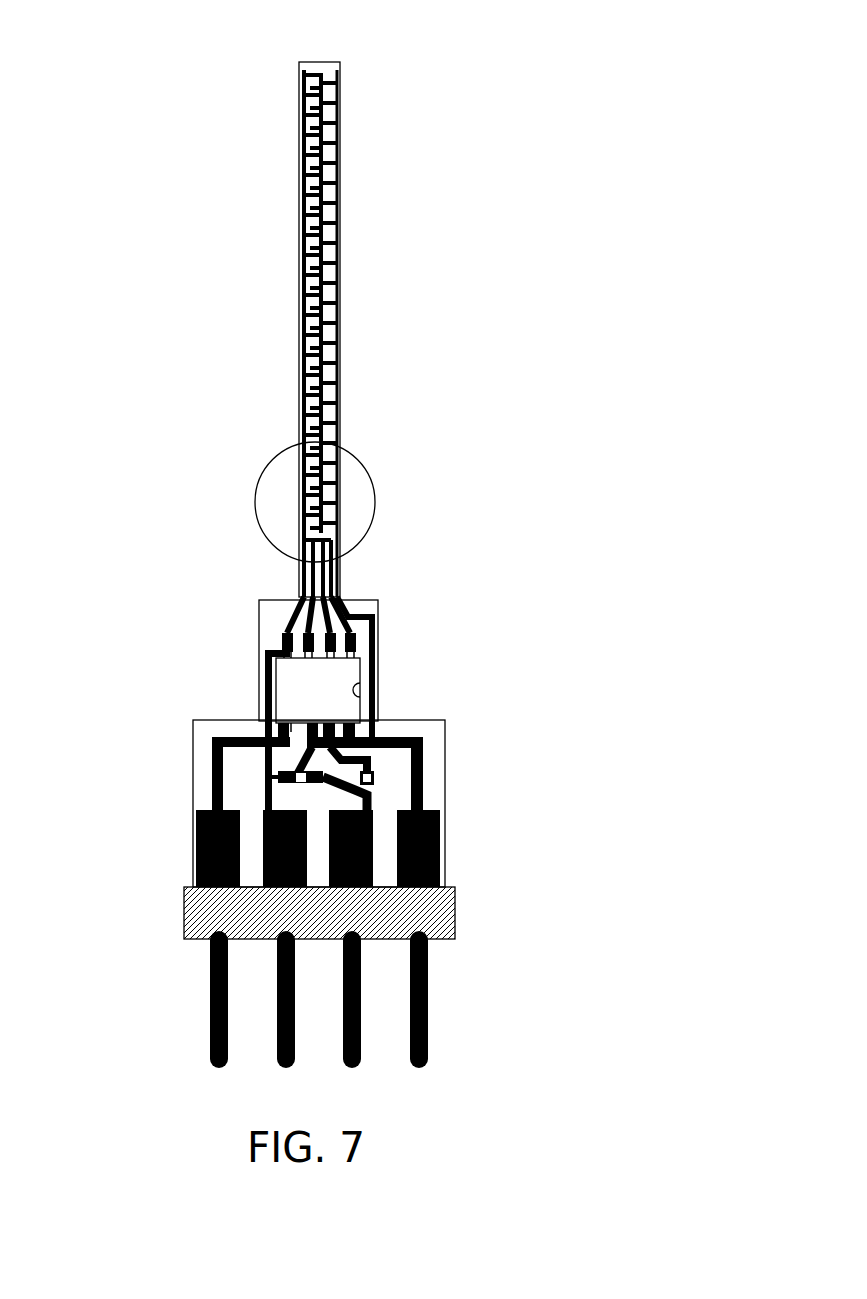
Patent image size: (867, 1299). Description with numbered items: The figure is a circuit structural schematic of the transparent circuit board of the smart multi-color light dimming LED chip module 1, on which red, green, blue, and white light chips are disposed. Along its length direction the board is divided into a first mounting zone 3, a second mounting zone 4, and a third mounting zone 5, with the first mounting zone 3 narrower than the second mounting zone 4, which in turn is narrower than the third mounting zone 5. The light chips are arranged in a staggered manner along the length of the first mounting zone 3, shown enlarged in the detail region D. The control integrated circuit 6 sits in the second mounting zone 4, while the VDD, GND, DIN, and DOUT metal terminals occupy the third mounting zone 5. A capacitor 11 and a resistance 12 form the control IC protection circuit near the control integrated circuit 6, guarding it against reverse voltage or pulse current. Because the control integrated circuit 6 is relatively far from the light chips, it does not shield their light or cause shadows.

The smart multi-color light dimming LED chip module 1 is at (523, 40).
The first mounting zone 3 is at (297, 260).
The second mounting zone 4 is at (273, 613).
The third mounting zone 5 is at (203, 752).
The control integrated circuit 6 is at (344, 684).
The capacitor 11 is at (305, 773).
The resistance 12 is at (372, 775).
The detail region D is at (342, 502).